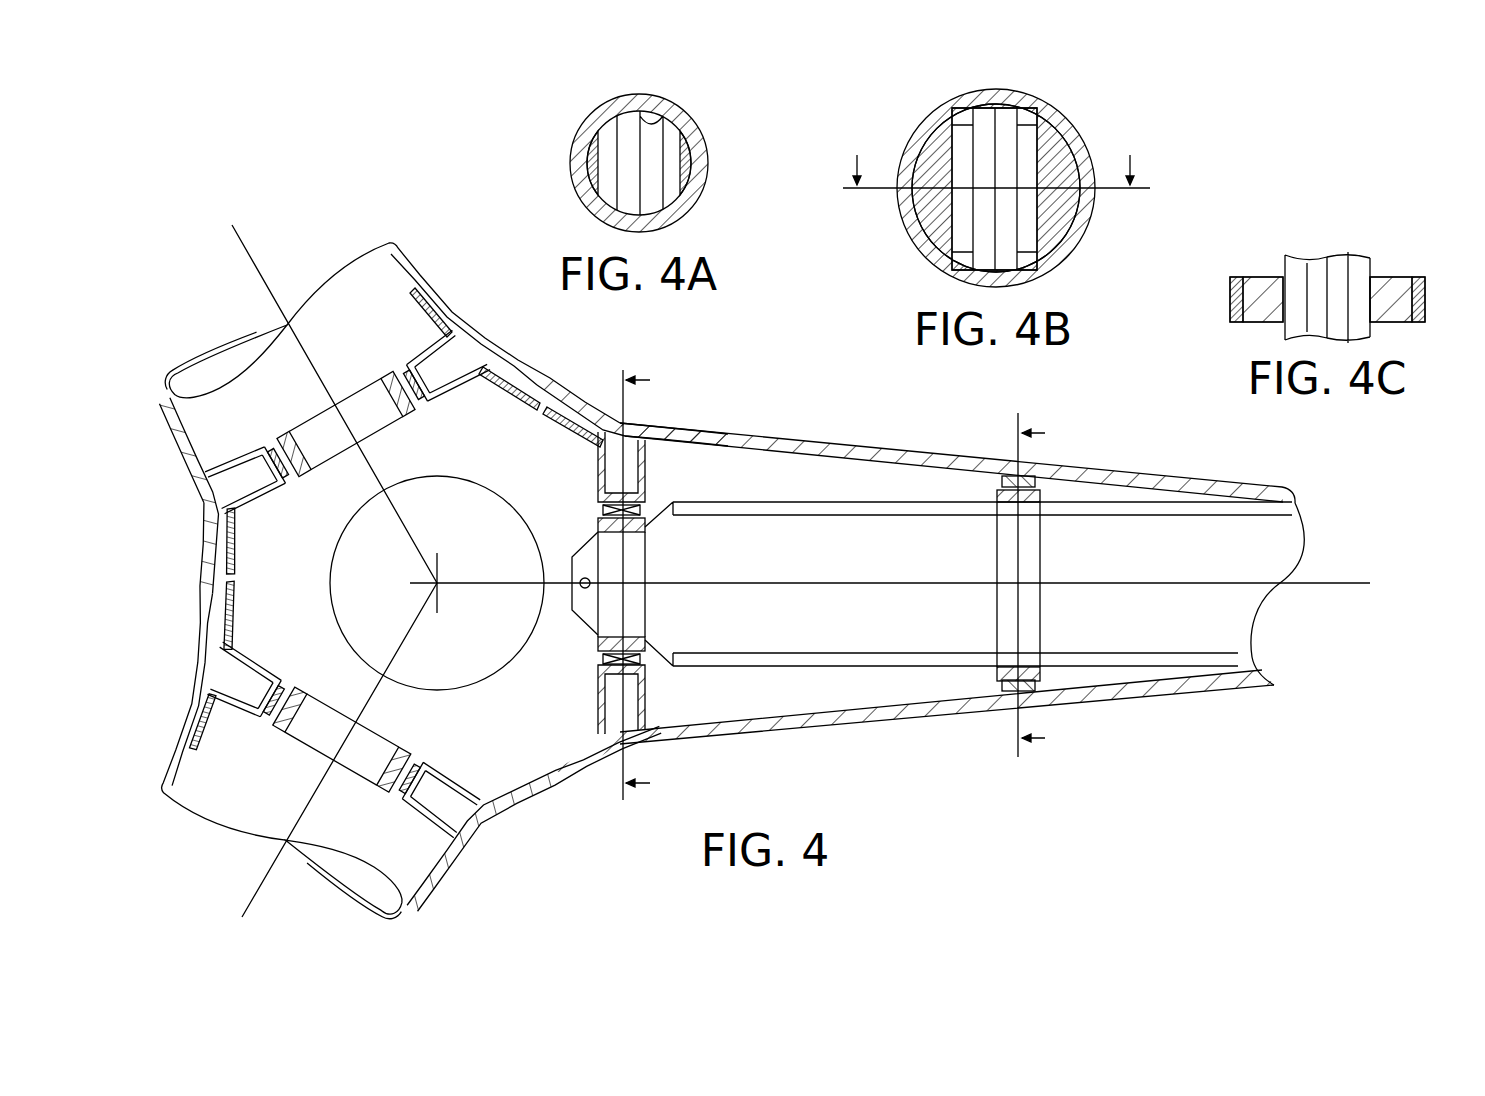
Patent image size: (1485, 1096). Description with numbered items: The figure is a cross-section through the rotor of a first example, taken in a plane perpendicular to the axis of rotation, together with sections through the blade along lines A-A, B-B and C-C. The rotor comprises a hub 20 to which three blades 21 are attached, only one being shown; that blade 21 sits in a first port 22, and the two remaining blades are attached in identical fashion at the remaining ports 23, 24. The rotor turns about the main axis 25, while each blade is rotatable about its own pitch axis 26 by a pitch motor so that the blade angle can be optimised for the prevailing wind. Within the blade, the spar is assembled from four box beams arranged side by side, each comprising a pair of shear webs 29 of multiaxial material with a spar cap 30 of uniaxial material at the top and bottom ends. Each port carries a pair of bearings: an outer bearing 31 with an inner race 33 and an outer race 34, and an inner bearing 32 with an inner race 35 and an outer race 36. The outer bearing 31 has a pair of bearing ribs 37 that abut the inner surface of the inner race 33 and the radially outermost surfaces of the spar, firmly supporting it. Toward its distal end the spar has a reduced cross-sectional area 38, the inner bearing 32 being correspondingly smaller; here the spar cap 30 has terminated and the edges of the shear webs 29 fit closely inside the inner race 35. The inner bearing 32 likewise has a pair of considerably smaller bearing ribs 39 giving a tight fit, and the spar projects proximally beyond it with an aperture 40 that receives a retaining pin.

In FIG. 4, the hub 20 is at (780, 447).
In FIG. 4, the blade 21 is at (1240, 640).
In FIG. 4, the first port 22 is at (772, 715).
In FIG. 4, the remaining port 23 is at (197, 766).
In FIG. 4, the remaining port 24 is at (215, 438).
In FIG. 4, the main axis 25 is at (440, 580).
In FIG. 4, the pitch axis 26 is at (250, 252).
In FIG. 4, the shear web 29 is at (1300, 548).
In FIG. 4A, the shear web 29 is at (675, 122).
In FIG. 4B, the shear web 29 is at (962, 216).
In FIG. 4C, the shear web 29 is at (1312, 268).
In FIG. 4, the spar cap 30 is at (1148, 510).
In FIG. 4, the outer bearing 31 is at (1070, 585).
In FIG. 4B, the outer bearing 31 is at (996, 119).
In FIG. 4, the inner bearing 32 is at (423, 583).
In FIG. 4A, the inner bearing 32 is at (542, 74).
In FIG. 4, the inner race 33 is at (997, 495).
In FIG. 4B, the inner race 33 is at (1068, 243).
In FIG. 4C, the inner race 33 is at (1418, 300).
In FIG. 4, the outer race 34 is at (1008, 478).
In FIG. 4, the inner race 35 is at (642, 530).
In FIG. 4A, the inner race 35 is at (650, 102).
In FIG. 4, the outer race 36 is at (603, 510).
In FIG. 4B, the bearing rib 37 is at (940, 142).
In FIG. 4, the reduced cross-sectional area 38 is at (598, 622).
In FIG. 4A, the bearing rib 39 is at (592, 160).
In FIG. 4, the aperture 40 is at (585, 577).